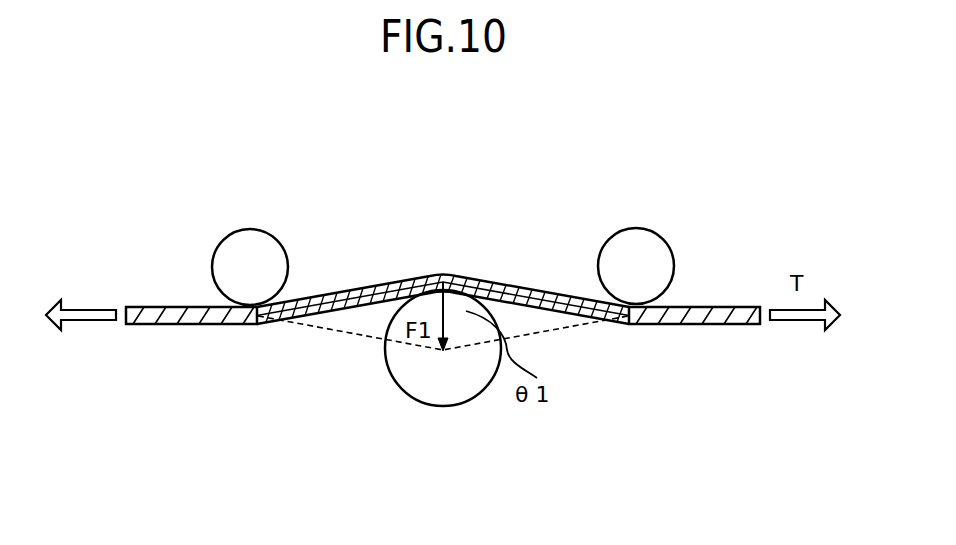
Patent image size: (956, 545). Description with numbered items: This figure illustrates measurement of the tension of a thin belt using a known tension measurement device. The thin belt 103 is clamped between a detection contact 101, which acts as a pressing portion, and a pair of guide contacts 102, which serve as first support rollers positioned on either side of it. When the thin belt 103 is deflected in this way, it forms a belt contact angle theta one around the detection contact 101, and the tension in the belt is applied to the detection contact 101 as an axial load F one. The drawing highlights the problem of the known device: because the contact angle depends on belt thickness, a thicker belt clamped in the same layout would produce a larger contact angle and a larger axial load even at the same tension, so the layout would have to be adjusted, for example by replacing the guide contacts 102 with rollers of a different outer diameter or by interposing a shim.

The detection contact 101 is at (445, 392).
The guide contacts 102 is at (250, 245).
The thin belt 103 is at (152, 305).